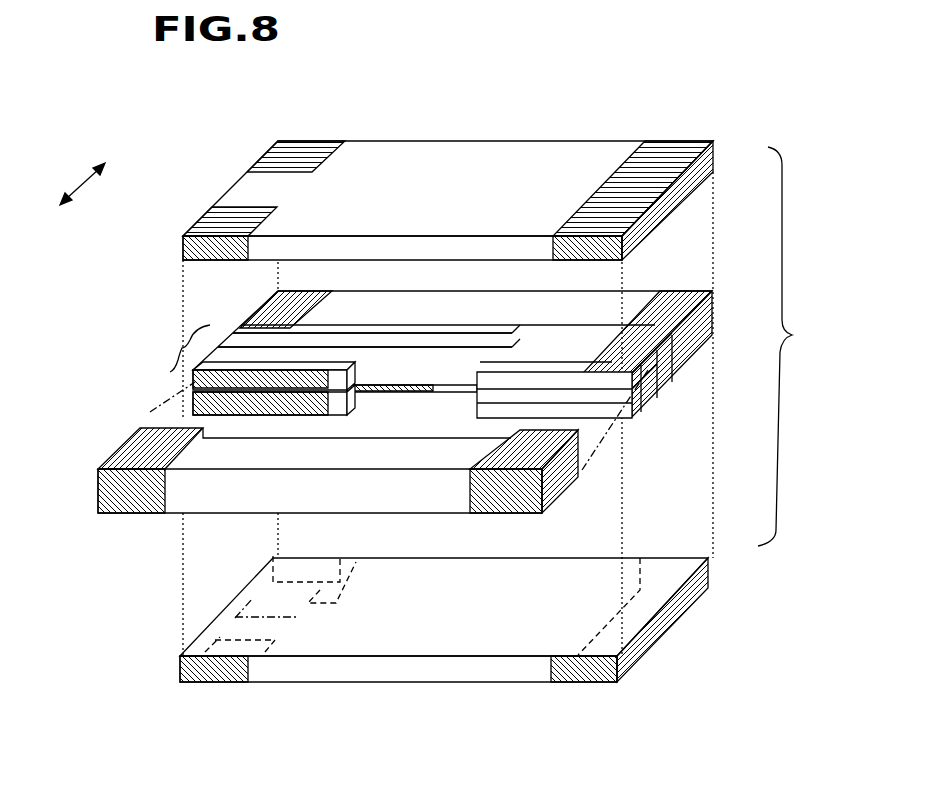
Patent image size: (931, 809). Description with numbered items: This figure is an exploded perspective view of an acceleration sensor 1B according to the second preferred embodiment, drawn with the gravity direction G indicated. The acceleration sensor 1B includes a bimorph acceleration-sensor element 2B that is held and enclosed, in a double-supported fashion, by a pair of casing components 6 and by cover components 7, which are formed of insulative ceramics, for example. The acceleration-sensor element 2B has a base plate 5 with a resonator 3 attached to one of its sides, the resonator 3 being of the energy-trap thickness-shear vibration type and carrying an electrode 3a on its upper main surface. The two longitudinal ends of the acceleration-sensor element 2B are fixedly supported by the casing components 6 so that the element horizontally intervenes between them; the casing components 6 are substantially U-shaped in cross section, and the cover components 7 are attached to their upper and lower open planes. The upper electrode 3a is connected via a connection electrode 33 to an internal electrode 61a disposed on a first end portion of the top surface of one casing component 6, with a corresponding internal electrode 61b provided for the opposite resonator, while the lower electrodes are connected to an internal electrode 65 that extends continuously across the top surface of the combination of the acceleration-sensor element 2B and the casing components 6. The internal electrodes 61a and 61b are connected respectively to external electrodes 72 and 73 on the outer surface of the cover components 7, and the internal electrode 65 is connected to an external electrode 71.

The acceleration sensor 1B is at (796, 346).
The bimorph acceleration-sensor element 2B is at (177, 346).
The resonator 3 is at (509, 386).
The electrode 3a is at (374, 392).
The connection electrode 33 is at (197, 390).
The base plate 5 is at (421, 349).
The casing component 6 is at (490, 300).
The internal electrode 61a is at (135, 447).
The internal electrode 61b is at (264, 312).
The internal electrode 65 is at (680, 335).
The cover component 7 is at (473, 150).
The external electrode 71 is at (660, 150).
The external electrode 72 is at (210, 212).
The external electrode 73 is at (270, 152).
The gravity direction G is at (78, 178).